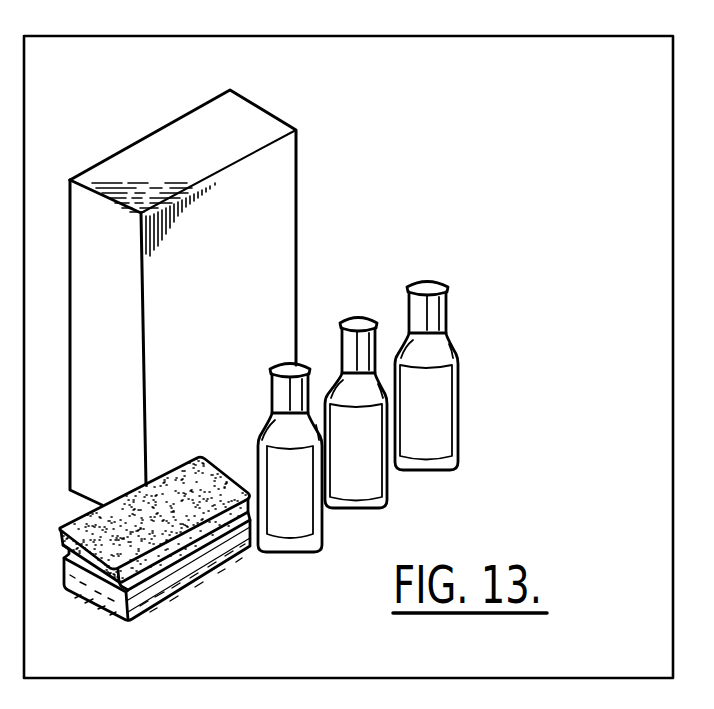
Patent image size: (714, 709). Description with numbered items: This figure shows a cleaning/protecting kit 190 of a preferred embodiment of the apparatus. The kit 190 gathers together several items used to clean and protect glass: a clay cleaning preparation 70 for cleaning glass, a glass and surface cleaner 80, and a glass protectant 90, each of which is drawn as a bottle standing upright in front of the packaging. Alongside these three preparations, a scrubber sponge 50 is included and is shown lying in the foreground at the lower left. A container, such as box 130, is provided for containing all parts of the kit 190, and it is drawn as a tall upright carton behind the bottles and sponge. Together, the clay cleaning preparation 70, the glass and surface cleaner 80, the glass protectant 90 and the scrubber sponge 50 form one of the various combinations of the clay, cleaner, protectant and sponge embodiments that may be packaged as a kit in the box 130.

The box 130 is at (276, 163).
The scrubber sponge 50 is at (193, 565).
The clay cleaning preparation 70 is at (298, 549).
The glass and surface cleaner 80 is at (375, 502).
The glass protectant 90 is at (458, 461).
The cleaning kit 190 is at (440, 215).